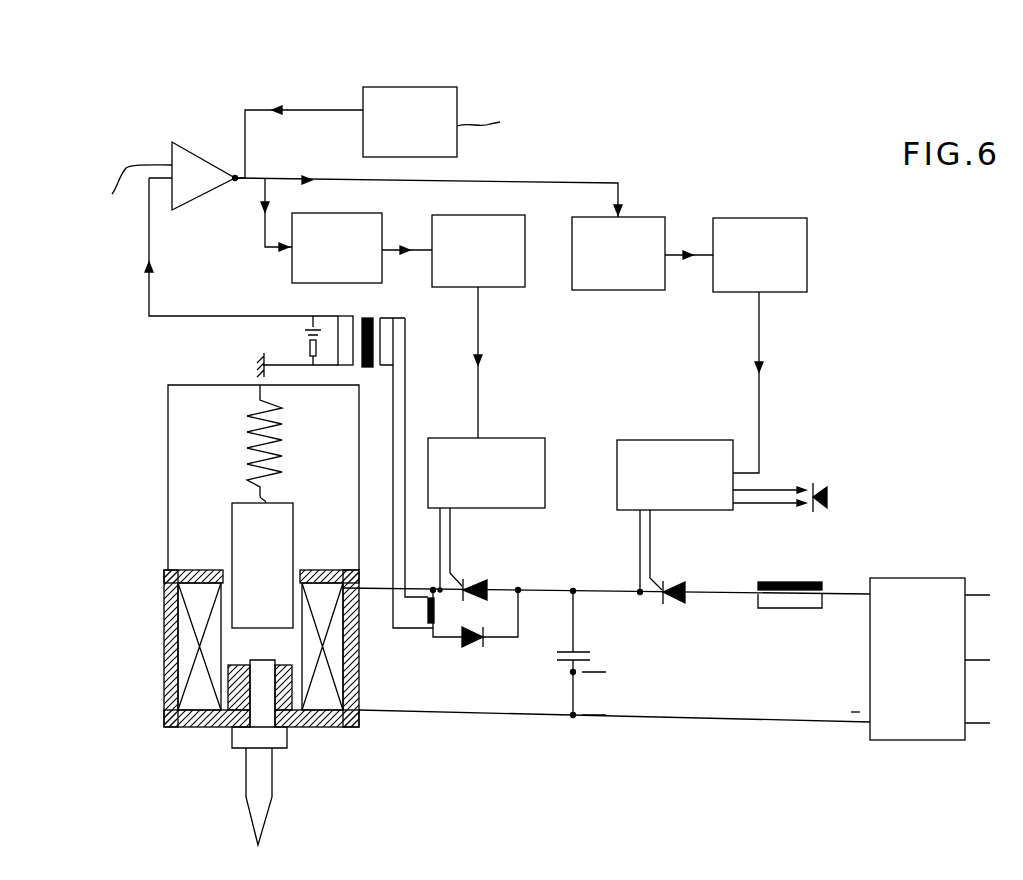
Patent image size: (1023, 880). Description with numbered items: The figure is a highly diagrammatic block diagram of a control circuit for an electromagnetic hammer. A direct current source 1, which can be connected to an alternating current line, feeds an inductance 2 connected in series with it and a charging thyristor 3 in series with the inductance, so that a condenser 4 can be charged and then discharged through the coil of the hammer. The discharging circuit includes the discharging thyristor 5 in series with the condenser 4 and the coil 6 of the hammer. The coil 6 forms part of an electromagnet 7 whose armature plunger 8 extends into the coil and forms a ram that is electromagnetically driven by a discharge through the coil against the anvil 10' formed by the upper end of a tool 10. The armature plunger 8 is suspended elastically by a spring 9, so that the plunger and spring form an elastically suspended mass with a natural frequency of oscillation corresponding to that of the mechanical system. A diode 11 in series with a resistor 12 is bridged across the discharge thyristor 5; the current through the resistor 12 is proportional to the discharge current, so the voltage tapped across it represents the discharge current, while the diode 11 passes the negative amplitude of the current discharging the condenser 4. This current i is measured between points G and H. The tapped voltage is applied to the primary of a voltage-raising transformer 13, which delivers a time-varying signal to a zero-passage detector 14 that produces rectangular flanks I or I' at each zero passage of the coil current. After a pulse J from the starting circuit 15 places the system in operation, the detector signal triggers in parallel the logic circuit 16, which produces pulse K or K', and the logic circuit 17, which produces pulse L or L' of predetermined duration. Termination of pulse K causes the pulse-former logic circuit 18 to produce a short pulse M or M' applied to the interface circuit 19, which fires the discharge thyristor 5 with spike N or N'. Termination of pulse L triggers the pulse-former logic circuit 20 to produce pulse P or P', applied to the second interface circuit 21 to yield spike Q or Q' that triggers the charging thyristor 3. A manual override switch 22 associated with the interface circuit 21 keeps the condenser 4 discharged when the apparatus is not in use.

The direct current source 1 is at (924, 676).
The inductance 2 is at (792, 606).
The charging thyristor 3 is at (681, 606).
The condenser 4 is at (594, 657).
The discharging thyristor 5 is at (485, 583).
The coil 6 is at (185, 648).
The electromagnet 7 is at (333, 715).
The armature plunger 8 is at (280, 534).
The spring 9 is at (248, 455).
The tool 10 is at (229, 796).
The anvil 10' is at (260, 691).
The diode 11 is at (467, 648).
The resistor 12 is at (426, 613).
The voltage-raising transformer 13 is at (362, 312).
The zero-passage detector 14 is at (185, 161).
The starting circuit 15 is at (421, 136).
The logic circuit 16 is at (348, 262).
The logic circuit 17 is at (629, 266).
The logic circuit 18 is at (489, 264).
The interface circuit 19 is at (498, 486).
The pulse-former logic circuit 20 is at (770, 268).
The second interface circuit 21 is at (686, 488).
The manual override switch 22 is at (815, 490).